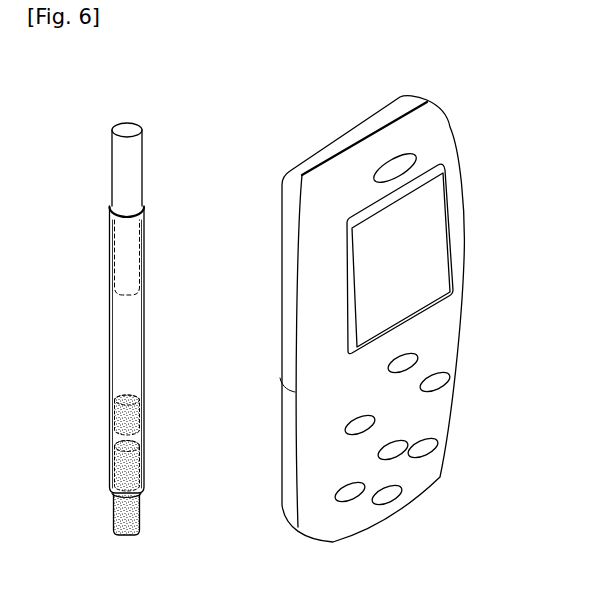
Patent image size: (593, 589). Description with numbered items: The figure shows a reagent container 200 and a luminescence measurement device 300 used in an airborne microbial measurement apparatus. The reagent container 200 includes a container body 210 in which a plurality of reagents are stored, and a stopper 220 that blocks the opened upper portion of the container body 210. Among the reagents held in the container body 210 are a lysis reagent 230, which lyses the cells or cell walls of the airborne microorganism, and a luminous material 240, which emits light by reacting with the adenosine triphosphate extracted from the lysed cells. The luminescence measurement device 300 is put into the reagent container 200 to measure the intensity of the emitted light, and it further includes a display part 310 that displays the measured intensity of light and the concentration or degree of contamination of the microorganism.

The reagent container 200 is at (75, 124).
The container body 210 is at (119, 332).
The stopper 220 is at (135, 164).
The lysis reagent 230 is at (107, 424).
The luminous material 240 is at (107, 476).
The luminescence measurement device 300 is at (345, 105).
The display part 310 is at (408, 197).